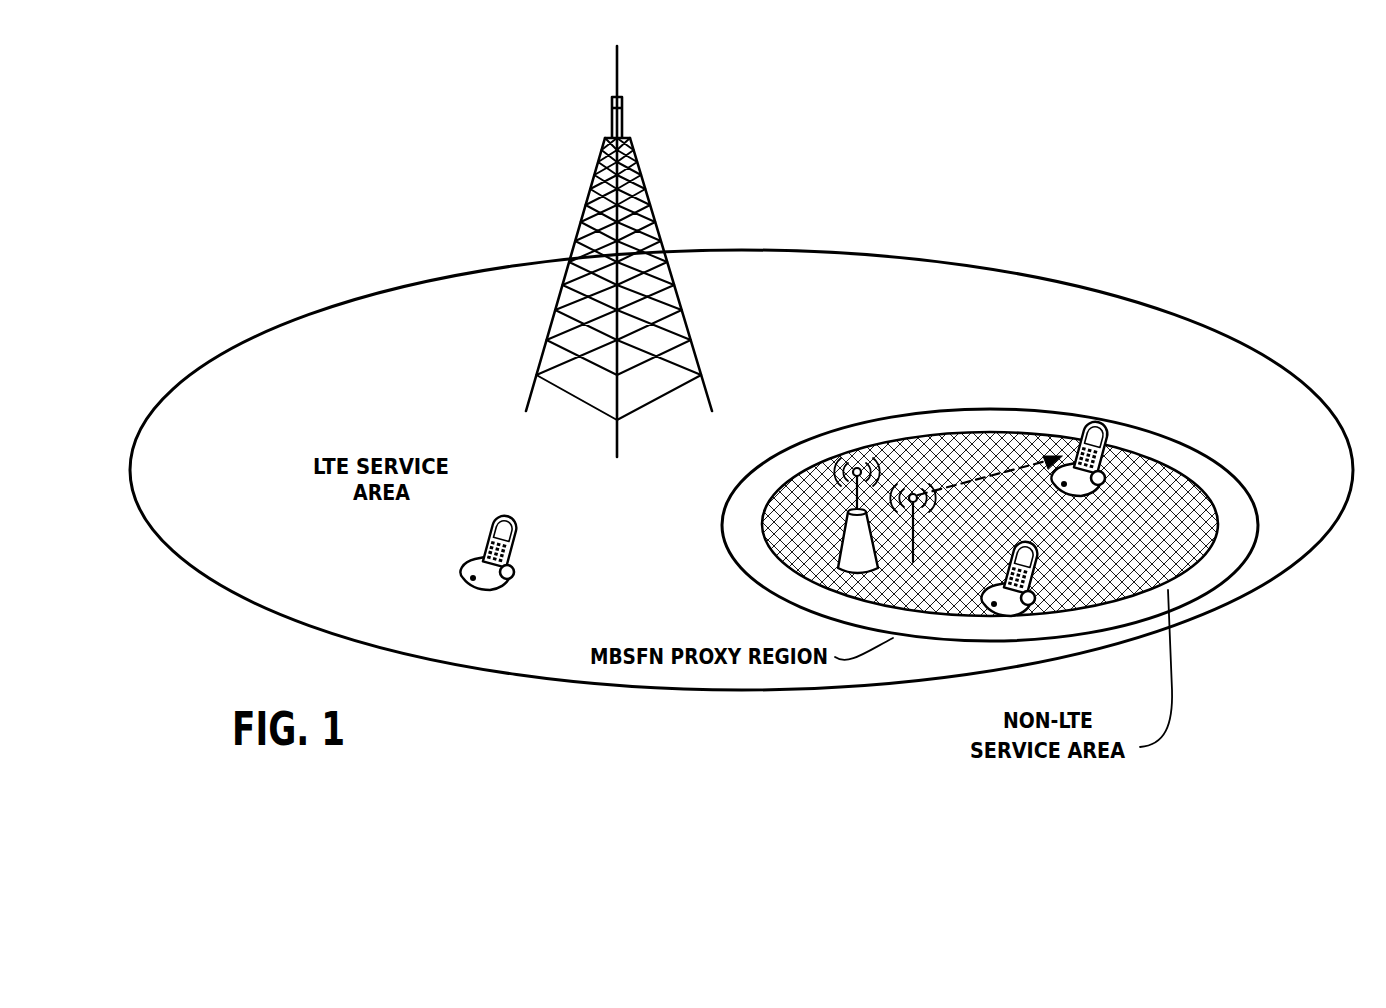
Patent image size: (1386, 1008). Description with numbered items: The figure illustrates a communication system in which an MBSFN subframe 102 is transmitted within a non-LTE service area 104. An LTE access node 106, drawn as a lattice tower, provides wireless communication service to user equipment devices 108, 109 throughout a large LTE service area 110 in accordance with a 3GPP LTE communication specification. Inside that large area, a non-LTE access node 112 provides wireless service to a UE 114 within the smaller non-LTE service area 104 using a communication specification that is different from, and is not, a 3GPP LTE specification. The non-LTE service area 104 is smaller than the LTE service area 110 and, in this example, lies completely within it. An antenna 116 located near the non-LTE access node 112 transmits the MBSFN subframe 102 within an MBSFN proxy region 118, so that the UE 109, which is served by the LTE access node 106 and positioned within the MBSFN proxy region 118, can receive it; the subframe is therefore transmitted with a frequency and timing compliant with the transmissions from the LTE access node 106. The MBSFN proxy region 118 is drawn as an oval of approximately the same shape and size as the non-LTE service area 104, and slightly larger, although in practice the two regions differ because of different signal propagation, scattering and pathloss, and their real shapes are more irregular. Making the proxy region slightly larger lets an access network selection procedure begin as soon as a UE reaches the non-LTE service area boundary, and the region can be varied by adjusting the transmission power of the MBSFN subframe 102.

The MBSFN subframe 102 is at (984, 475).
The non-LTE service area 104 is at (1148, 458).
The LTE access node 106 is at (574, 250).
The user equipment device 108 is at (505, 520).
The user equipment device 109 is at (1104, 422).
The LTE service area 110 is at (706, 251).
The non-LTE access node 112 is at (845, 527).
The user equipment device 114 is at (1032, 548).
The antenna 116 is at (918, 527).
The MBSFN proxy region 118 is at (1232, 475).